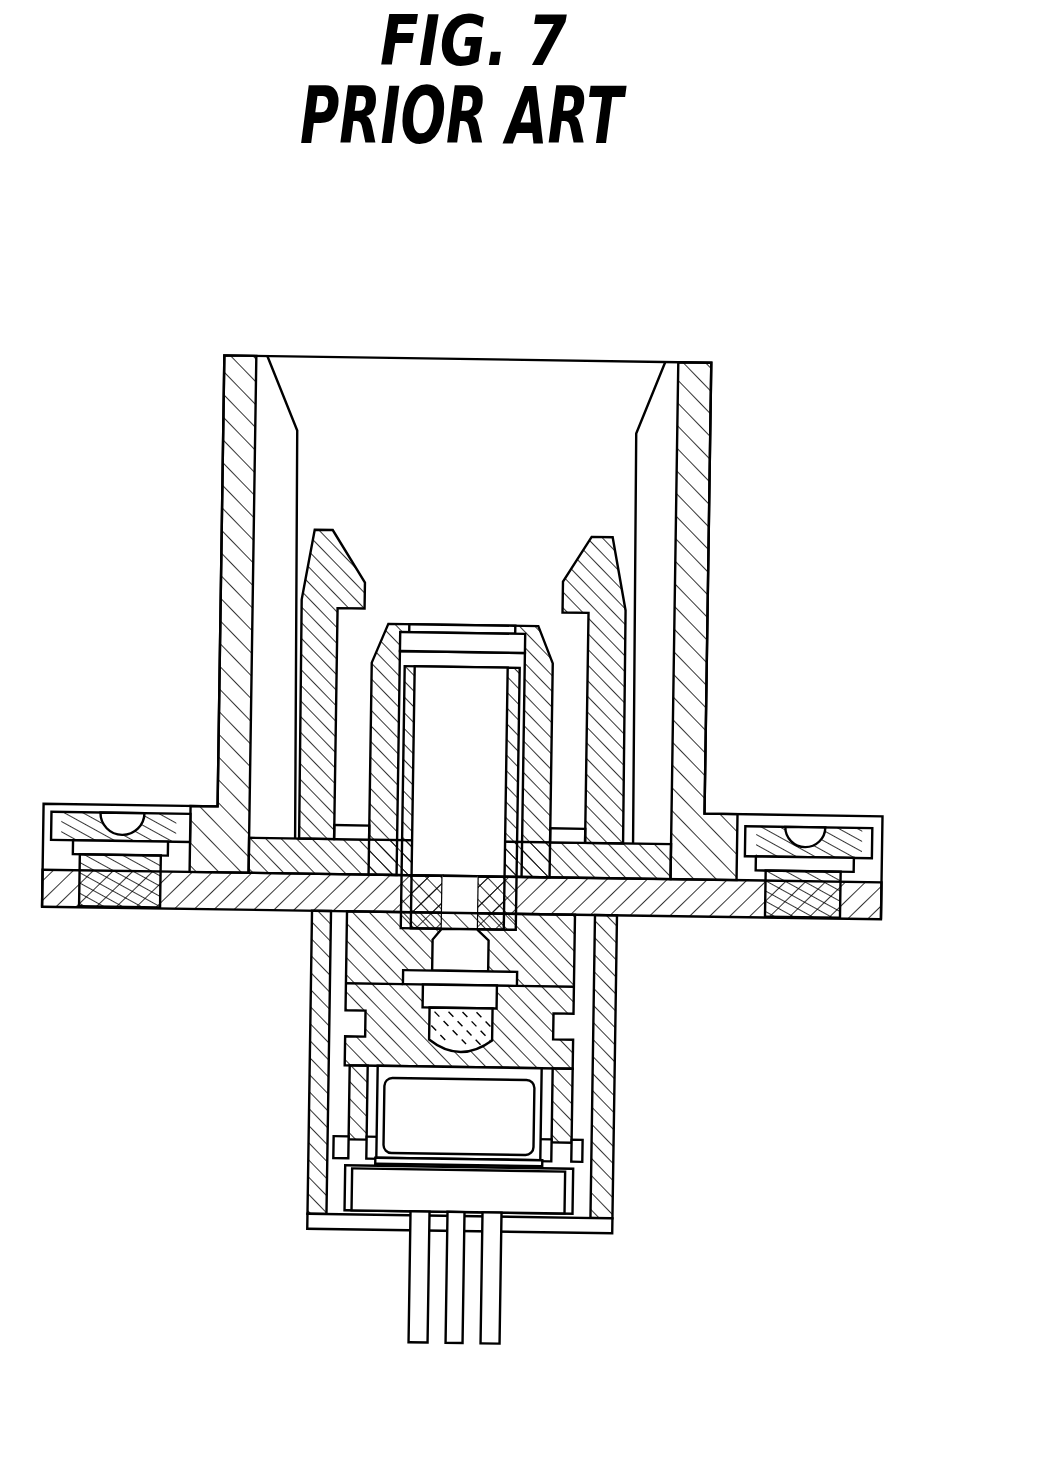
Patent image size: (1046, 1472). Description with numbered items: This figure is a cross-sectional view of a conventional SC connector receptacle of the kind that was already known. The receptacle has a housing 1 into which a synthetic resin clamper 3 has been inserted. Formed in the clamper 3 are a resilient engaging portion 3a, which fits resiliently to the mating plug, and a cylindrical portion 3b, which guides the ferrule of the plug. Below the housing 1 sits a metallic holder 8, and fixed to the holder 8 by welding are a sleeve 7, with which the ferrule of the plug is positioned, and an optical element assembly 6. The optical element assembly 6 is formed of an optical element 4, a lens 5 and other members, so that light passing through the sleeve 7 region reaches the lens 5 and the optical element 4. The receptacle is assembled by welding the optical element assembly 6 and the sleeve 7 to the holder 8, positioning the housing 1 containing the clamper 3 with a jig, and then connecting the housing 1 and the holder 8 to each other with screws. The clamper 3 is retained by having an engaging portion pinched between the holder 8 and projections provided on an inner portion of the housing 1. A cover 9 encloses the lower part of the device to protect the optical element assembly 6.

The housing 1 is at (688, 430).
The clamper 3 is at (561, 498).
The resilient engaging portion 3a is at (627, 580).
The cylindrical portion 3b is at (536, 711).
The optical element 4 is at (503, 1144).
The lens 5 is at (504, 1034).
The optical element assembly 6 is at (590, 1023).
The sleeve 7 is at (370, 659).
The holder 8 is at (200, 902).
The cover 9 is at (331, 1059).